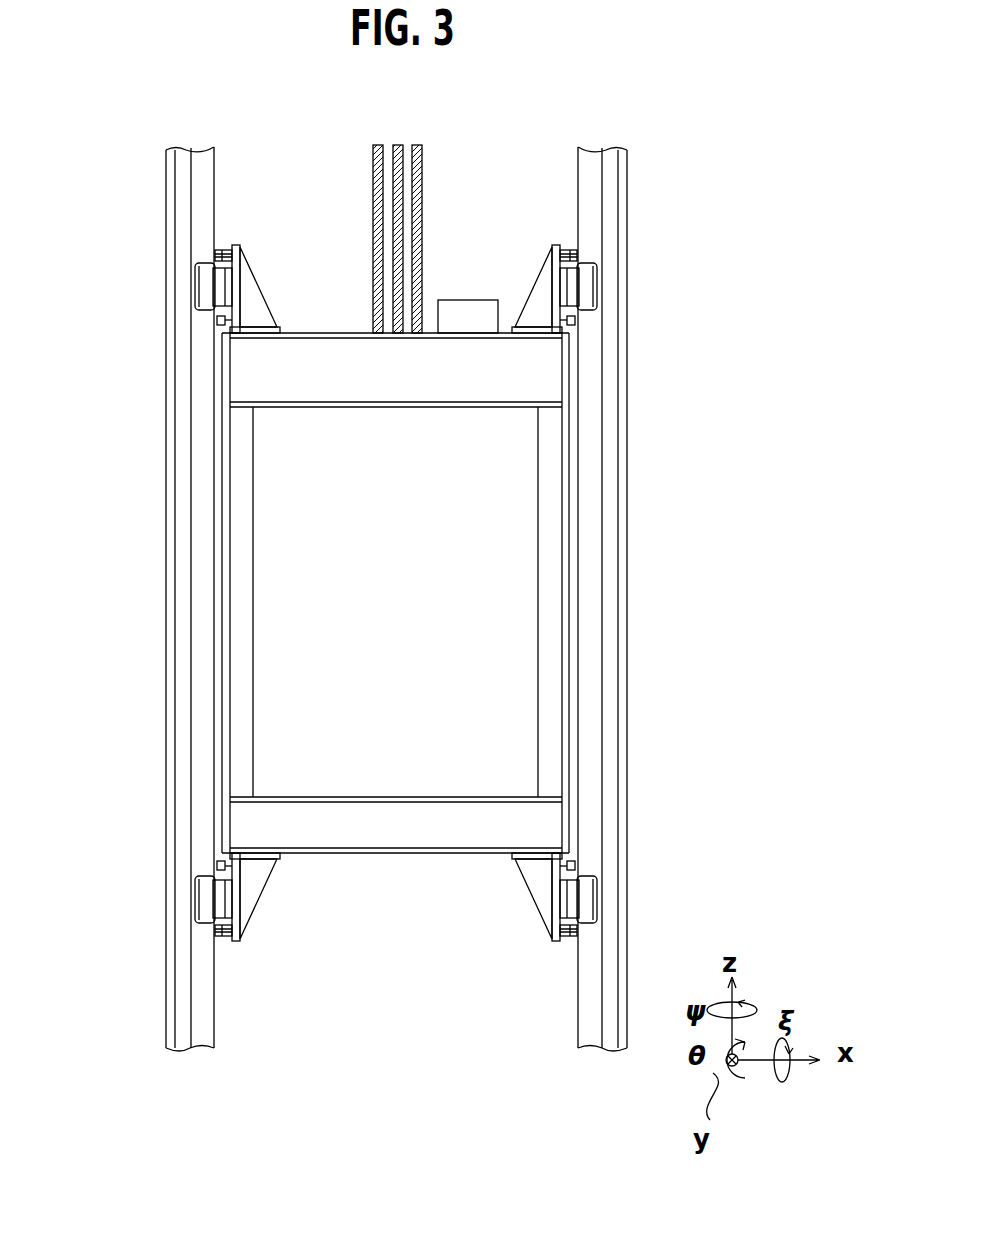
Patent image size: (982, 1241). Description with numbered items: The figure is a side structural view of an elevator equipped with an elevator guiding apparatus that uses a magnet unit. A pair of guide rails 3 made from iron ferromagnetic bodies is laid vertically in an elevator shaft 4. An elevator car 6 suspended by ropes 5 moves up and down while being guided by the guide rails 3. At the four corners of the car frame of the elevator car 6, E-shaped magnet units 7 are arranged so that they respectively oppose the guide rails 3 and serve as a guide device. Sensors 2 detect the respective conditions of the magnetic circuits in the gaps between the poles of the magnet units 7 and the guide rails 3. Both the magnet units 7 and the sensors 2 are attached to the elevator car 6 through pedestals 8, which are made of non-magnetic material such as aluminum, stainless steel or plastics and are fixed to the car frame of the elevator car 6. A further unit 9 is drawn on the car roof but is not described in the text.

The sensor 2 is at (220, 250).
The guide rail 3 is at (172, 198).
The elevator shaft 4 is at (395, 677).
The rope 5 is at (425, 160).
The elevator car 6 is at (363, 835).
The magnet unit 7 is at (233, 287).
The pedestal 8 is at (250, 302).
The sensor unit 9 is at (456, 303).